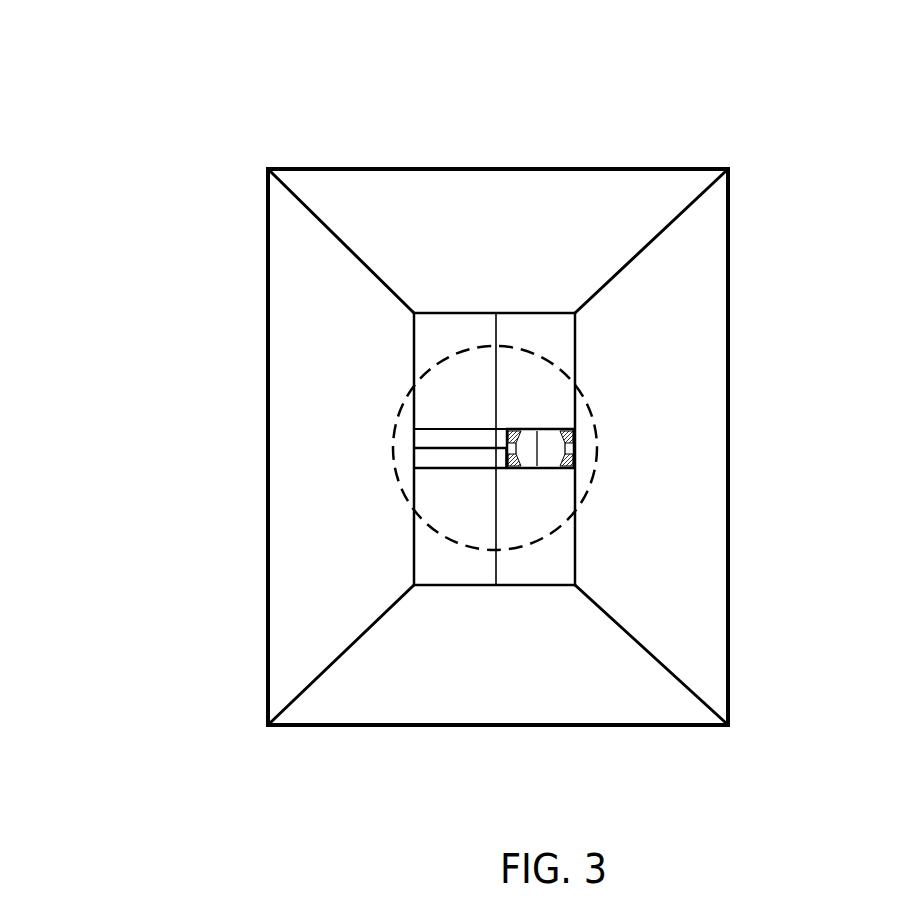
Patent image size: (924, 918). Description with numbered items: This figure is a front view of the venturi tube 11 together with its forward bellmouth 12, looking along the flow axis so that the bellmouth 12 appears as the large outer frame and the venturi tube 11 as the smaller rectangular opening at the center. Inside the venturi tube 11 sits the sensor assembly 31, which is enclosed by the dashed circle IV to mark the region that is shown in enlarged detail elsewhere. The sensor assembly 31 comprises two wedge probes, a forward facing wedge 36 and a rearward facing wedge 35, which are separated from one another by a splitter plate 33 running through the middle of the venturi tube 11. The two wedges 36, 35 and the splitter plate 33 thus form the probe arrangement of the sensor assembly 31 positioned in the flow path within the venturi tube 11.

The forward bellmouth 12 is at (548, 167).
The venturi tube 11 is at (575, 338).
The splitter plate 33 is at (496, 563).
The rearward facing wedge 35 is at (452, 429).
The sensor assembly 31 is at (452, 468).
The forward facing wedge 36 is at (550, 428).
The dashed circle IV is at (597, 465).